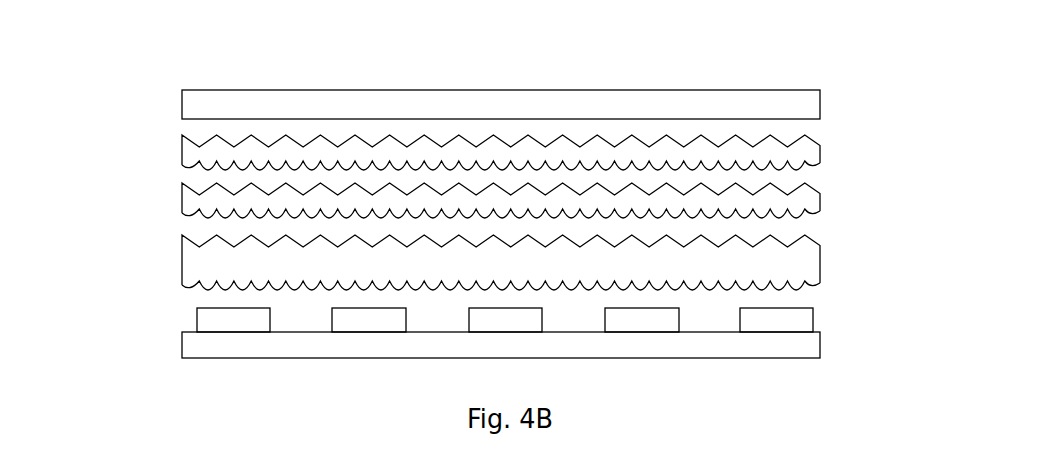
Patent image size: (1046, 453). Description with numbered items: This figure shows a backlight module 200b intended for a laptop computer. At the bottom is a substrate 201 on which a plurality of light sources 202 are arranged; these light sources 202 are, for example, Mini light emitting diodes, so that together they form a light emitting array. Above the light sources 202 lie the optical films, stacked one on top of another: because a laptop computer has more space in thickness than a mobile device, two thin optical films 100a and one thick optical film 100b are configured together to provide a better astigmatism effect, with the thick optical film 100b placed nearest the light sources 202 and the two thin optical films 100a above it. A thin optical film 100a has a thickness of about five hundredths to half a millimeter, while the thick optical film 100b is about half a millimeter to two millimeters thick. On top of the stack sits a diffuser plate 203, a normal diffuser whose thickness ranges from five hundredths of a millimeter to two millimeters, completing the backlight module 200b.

The diffuser plate 203 is at (282, 90).
The thin optical film 100a is at (182, 150).
The thick optical film 100b is at (182, 257).
The light sources 202 is at (197, 320).
The substrate 201 is at (198, 358).
The backlight module 200b is at (920, 376).